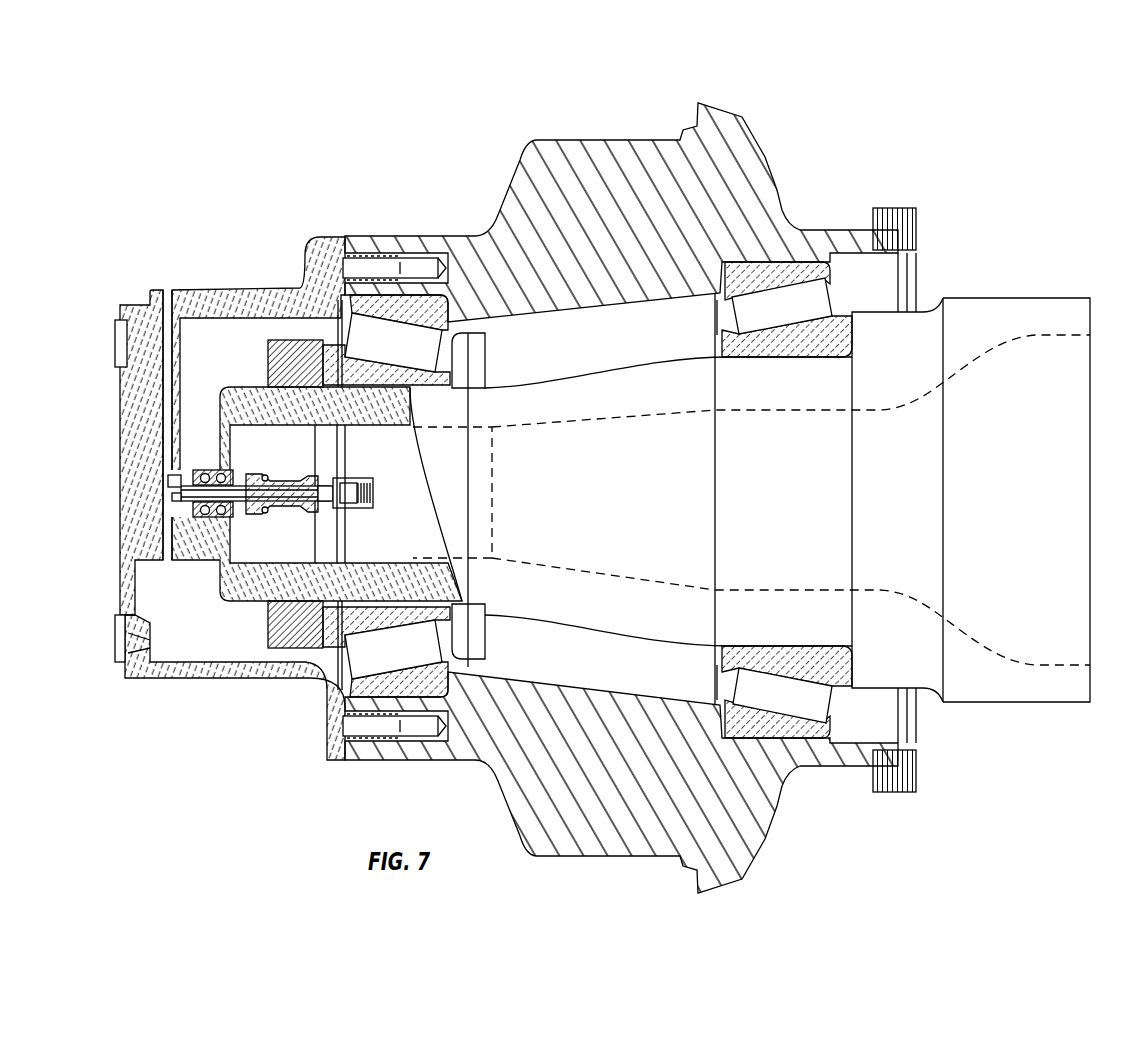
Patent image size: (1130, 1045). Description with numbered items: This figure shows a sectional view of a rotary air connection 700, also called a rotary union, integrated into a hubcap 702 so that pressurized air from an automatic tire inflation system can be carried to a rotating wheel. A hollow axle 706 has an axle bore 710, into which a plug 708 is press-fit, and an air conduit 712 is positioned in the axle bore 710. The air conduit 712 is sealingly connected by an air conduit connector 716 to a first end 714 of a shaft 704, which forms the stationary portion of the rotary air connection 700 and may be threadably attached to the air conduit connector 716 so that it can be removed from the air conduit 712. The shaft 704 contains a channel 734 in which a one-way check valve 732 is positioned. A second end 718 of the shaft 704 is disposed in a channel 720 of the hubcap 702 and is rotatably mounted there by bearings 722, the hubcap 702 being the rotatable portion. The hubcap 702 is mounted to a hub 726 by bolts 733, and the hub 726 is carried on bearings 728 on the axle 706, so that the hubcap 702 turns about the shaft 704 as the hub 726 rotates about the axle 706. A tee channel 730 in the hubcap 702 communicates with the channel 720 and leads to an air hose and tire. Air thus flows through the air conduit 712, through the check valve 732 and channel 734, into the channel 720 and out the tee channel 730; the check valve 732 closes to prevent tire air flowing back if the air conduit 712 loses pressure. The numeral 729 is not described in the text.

The rotary air connection 700 is at (236, 503).
The hubcap 702 is at (114, 457).
The shaft 704 is at (250, 514).
The hollow axle 706 is at (1066, 300).
The plug 708 is at (344, 530).
The axle bore 710 is at (1044, 337).
The air conduit 712 is at (398, 478).
The first end of the shaft 714 is at (300, 508).
The air conduit connector 716 is at (306, 478).
The second end of the shaft 718 is at (192, 510).
The channel of the hubcap 720 is at (163, 499).
The bearings 722 is at (221, 470).
The hub 726 is at (716, 112).
The bearings 728 is at (445, 362).
The connector 729 is at (182, 476).
The tee channel 730 is at (165, 372).
The one-way check valve 732 is at (238, 498).
The bolts 733 is at (372, 256).
The channel of the shaft 734 is at (206, 496).